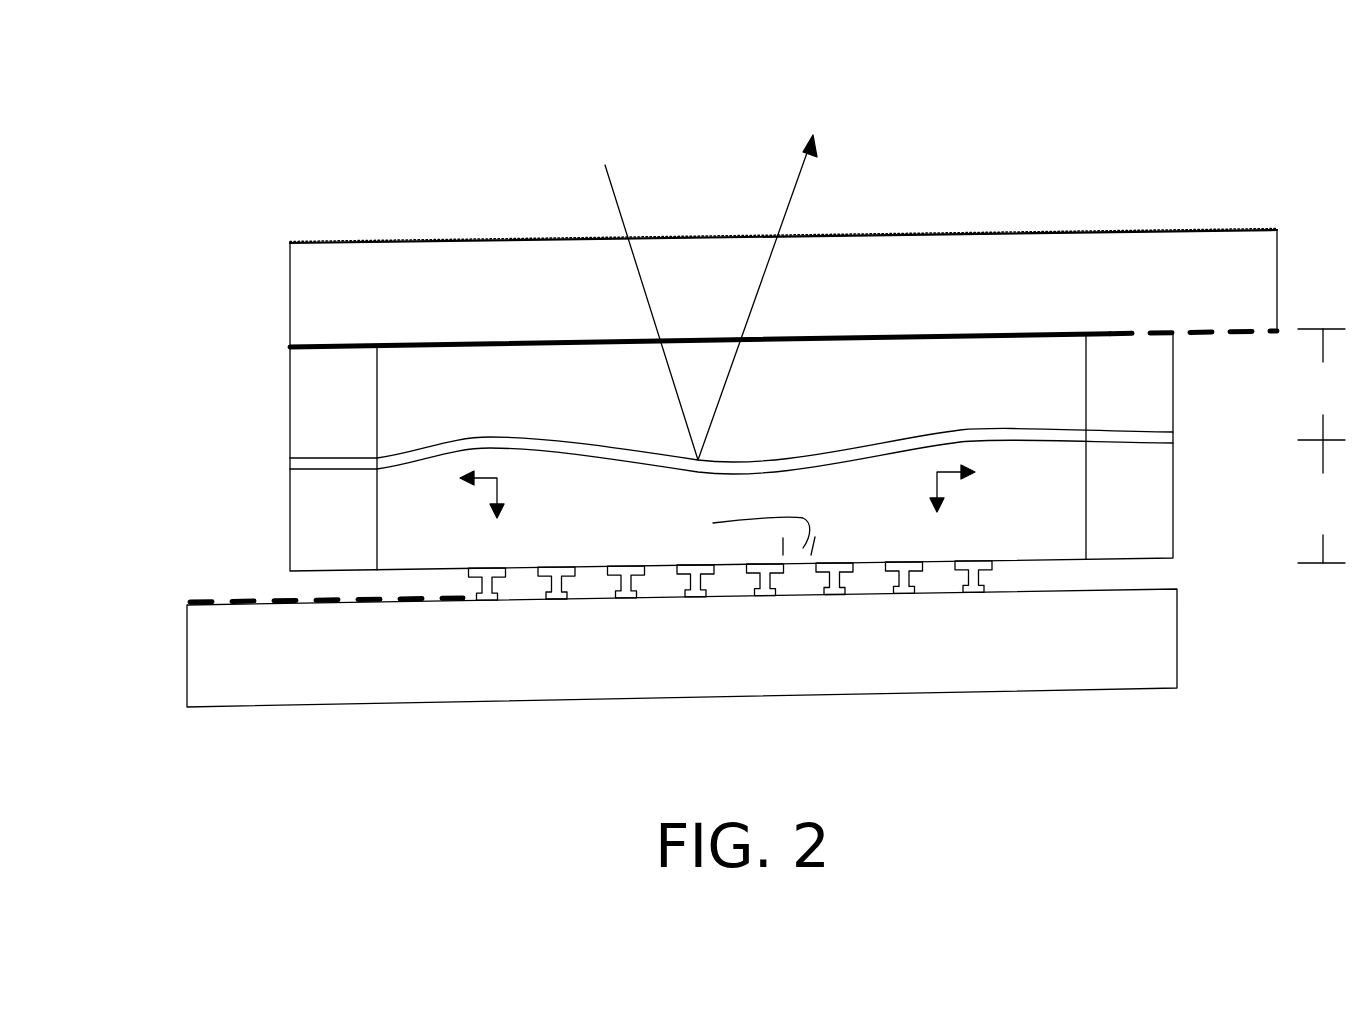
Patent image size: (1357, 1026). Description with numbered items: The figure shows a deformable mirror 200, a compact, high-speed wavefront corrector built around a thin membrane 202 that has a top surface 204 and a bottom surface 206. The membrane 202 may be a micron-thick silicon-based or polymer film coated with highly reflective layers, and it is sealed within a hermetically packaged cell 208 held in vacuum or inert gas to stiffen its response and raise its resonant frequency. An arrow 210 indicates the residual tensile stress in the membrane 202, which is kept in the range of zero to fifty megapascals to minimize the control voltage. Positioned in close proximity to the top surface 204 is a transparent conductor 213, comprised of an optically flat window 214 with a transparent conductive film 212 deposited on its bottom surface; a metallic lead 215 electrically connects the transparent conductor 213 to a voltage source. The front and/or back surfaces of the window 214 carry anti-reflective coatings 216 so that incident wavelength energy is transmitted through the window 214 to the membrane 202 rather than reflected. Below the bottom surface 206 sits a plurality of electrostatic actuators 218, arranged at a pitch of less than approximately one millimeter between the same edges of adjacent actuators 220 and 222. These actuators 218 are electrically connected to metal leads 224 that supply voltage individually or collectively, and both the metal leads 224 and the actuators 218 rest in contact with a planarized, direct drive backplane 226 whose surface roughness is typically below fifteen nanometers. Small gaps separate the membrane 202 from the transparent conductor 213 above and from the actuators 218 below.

The deformable mirror 200 is at (988, 174).
The membrane 202 is at (302, 463).
The top surface 204 is at (428, 440).
The bottom surface 206 is at (415, 455).
The hermetically packaged cell 208 is at (932, 399).
The arrow 210 is at (490, 477).
The transparent conductive film 212 is at (862, 335).
The transparent conductor 213 is at (176, 210).
The optically flat window 214 is at (1092, 296).
The metallic lead 215 is at (1198, 332).
The anti-reflective coating 216 is at (1055, 231).
The electrostatic actuators 218 is at (988, 603).
The actuator 220 is at (770, 570).
The actuator 222 is at (850, 562).
The metal leads 224 is at (200, 598).
The direct drive backplane 226 is at (1093, 659).